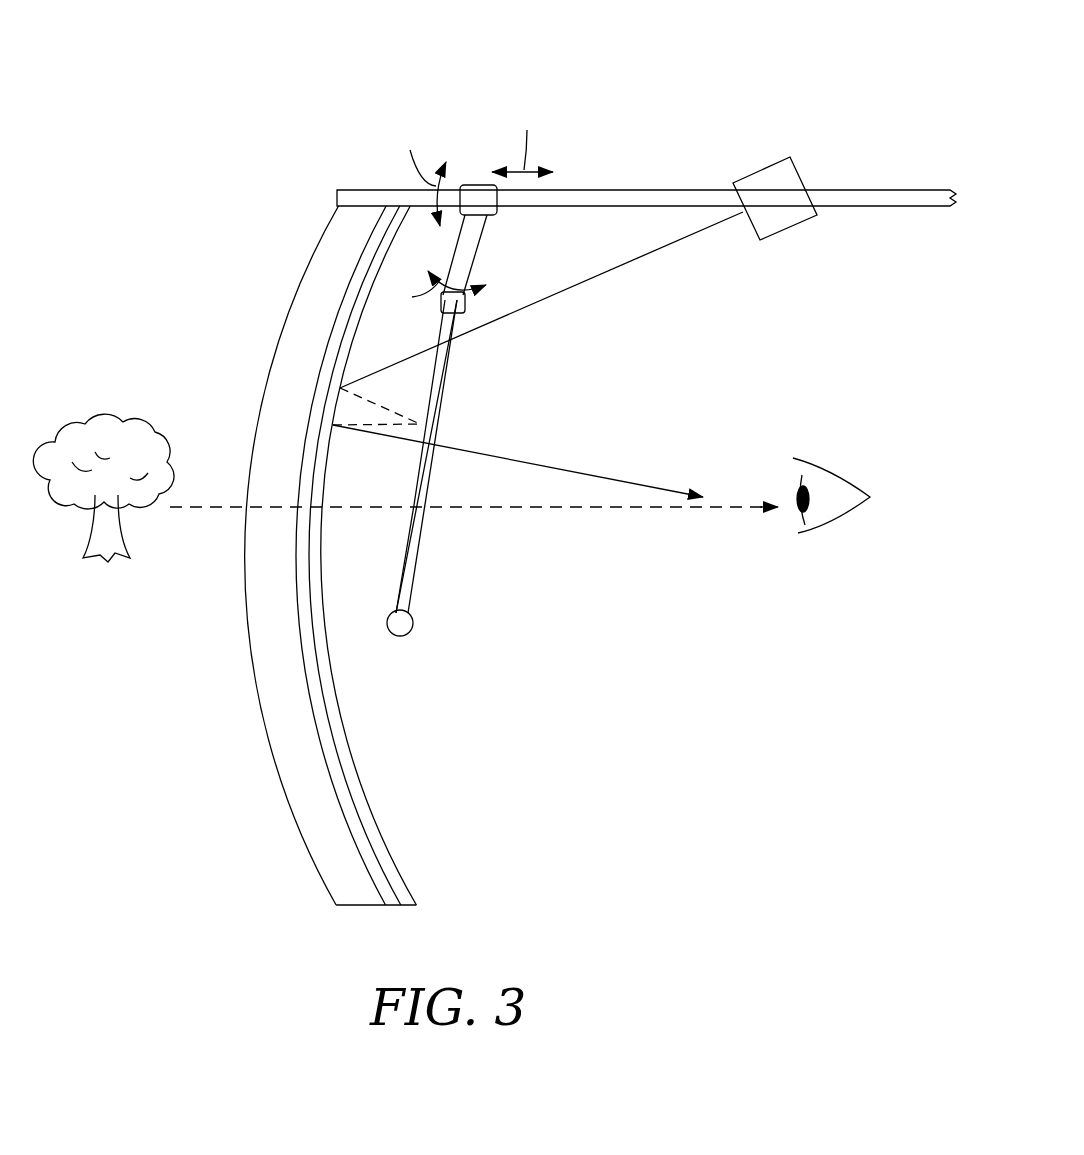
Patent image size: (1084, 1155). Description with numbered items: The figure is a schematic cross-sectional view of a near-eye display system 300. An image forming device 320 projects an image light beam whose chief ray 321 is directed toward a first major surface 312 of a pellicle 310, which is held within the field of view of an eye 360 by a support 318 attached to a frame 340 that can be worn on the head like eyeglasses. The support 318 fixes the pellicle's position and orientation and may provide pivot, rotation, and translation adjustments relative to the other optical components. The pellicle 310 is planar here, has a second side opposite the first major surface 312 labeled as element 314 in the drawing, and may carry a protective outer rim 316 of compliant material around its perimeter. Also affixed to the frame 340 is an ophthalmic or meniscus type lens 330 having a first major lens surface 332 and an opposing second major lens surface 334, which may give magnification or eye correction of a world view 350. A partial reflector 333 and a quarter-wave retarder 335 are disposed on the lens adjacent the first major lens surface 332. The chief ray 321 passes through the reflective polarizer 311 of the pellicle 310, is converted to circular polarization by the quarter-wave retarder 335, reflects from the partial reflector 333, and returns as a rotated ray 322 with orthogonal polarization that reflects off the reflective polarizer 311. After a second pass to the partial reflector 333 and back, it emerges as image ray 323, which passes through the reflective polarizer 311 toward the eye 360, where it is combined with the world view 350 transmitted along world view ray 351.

The near-eye display system 300 is at (226, 73).
The pellicle 310 is at (355, 413).
The reflective polarizer 311 is at (415, 542).
The first major surface 312 is at (417, 569).
The rod lower end 314 is at (398, 591).
The protective outer rim 316 is at (412, 635).
The support 318 is at (477, 185).
The image forming device 320 is at (793, 165).
The chief ray 321 is at (605, 265).
The rotated ray 322 is at (395, 410).
The image ray 323 is at (602, 475).
The lens 330 is at (349, 519).
The first major lens surface 332 is at (390, 860).
The partial reflector 333 is at (337, 782).
The second major lens surface 334 is at (302, 835).
The quarter-wave retarder 335 is at (367, 823).
The frame 340 is at (612, 190).
The world view 350 is at (122, 383).
The world view ray 351 is at (632, 512).
The eye 360 is at (833, 467).